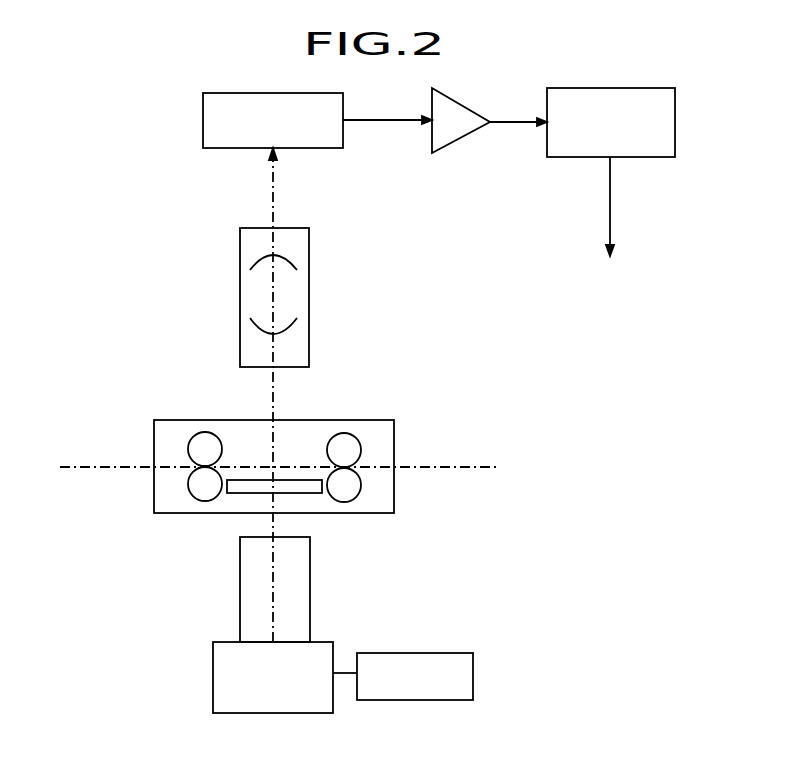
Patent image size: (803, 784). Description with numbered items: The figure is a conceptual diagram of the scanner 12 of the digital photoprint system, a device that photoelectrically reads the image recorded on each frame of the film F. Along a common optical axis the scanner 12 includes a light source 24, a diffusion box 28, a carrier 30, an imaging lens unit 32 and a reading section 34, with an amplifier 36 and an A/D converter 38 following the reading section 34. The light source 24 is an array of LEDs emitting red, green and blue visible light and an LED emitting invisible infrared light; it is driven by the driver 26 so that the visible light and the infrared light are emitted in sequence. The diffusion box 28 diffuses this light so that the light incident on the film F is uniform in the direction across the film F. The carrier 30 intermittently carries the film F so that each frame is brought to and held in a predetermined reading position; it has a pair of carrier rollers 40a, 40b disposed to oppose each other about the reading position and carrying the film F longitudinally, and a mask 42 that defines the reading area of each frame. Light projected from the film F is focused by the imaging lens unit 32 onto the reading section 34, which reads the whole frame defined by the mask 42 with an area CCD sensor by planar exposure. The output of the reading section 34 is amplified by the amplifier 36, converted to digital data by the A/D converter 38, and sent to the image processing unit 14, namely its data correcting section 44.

The scanner 12 is at (113, 662).
The image processing unit 14 is at (621, 276).
The data correcting section 44 is at (621, 276).
The light source 24 is at (282, 713).
The driver 26 is at (473, 679).
The diffusion box 28 is at (310, 608).
The carrier 30 is at (394, 430).
The imaging lens unit 32 is at (309, 307).
The reading section 34 is at (317, 148).
The amplifier 36 is at (452, 133).
The A/D converter 38 is at (675, 119).
The carrier roller 40a is at (197, 490).
The carrier roller 40b is at (355, 486).
The mask 42 is at (242, 490).
The film F is at (482, 468).